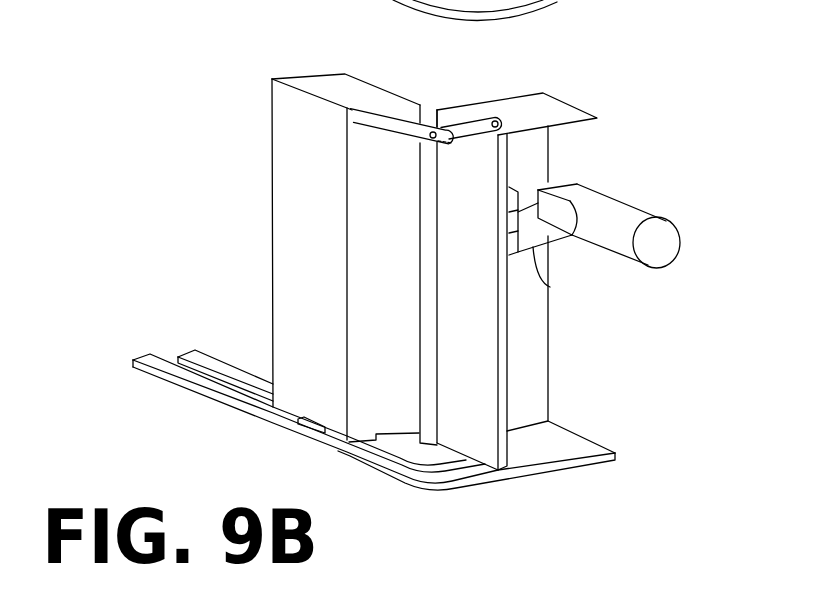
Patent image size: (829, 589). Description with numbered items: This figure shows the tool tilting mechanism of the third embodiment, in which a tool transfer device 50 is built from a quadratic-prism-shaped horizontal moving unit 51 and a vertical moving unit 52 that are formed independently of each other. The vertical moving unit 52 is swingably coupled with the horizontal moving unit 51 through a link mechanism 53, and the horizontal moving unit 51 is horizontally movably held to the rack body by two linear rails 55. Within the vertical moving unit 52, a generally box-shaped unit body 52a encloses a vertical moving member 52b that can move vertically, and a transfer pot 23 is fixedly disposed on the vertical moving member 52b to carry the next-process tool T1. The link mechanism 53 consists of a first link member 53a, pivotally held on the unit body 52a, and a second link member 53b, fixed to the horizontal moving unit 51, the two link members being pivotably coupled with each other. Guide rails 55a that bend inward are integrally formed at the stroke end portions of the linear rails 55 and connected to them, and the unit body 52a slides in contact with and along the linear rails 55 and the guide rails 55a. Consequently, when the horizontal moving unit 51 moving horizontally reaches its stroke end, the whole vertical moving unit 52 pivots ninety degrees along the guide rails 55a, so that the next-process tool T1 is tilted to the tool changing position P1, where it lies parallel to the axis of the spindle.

The tool transfer device 50 is at (232, 101).
The horizontal moving unit 51 is at (284, 79).
The vertical moving unit 52 is at (658, 285).
The unit body 52a is at (550, 352).
The vertical moving member 52b is at (550, 287).
The link mechanism 53 is at (517, 63).
The first link member 53a is at (479, 118).
The second link member 53b is at (428, 125).
The transfer pot 23 is at (580, 187).
The linear rails 55 is at (208, 347).
The guide rails 55a is at (588, 463).
The next-process tool T1 is at (679, 226).
The tool changing position P1 is at (662, 245).